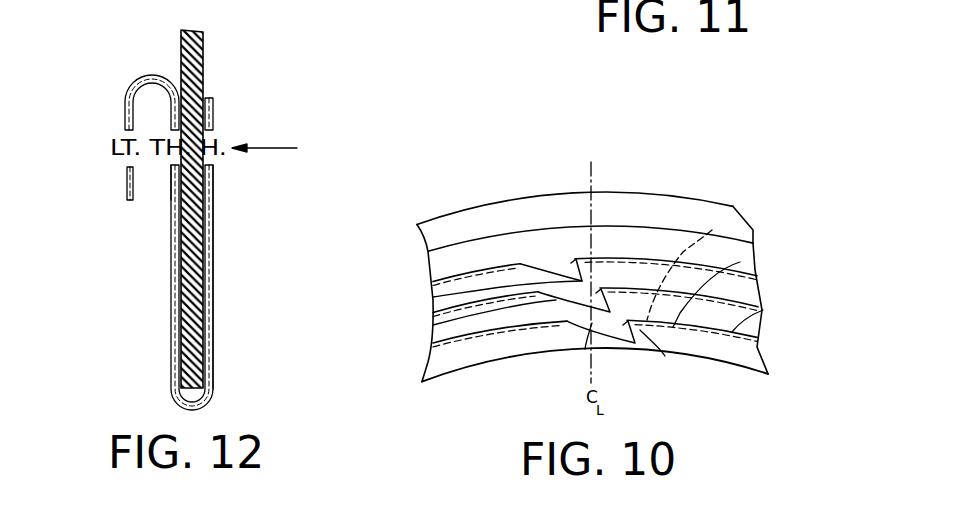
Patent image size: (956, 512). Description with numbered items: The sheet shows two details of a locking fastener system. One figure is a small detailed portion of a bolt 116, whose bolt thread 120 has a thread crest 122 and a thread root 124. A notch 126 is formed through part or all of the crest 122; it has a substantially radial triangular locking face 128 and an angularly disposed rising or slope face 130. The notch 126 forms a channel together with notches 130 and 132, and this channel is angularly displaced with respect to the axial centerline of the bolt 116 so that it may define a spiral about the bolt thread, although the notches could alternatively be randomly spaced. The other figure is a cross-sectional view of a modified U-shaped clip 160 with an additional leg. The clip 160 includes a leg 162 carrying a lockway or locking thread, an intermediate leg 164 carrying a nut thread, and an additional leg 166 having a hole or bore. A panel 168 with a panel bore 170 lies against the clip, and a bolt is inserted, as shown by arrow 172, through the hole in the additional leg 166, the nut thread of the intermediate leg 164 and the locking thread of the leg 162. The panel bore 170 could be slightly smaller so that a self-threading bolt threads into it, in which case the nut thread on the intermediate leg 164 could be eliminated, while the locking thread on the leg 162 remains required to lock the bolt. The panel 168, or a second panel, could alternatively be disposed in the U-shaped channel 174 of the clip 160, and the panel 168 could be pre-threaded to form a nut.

In FIG. 10, the bolt 116 is at (476, 372).
In FIG. 10, the bolt thread 120 is at (763, 310).
In FIG. 10, the thread crest 122 is at (740, 262).
In FIG. 10, the thread root 124 is at (712, 230).
In FIG. 10, the notch 126 is at (584, 350).
In FIG. 10, the locking face 128 is at (665, 356).
In FIG. 10, the slope face 130 is at (433, 325).
In FIG. 10, the notch 132 is at (433, 297).
In FIG. 12, the modified U-shaped clip 160 is at (142, 74).
In FIG. 12, the leg 162 is at (125, 176).
In FIG. 12, the intermediate leg 164 is at (175, 275).
In FIG. 12, the additional leg 166 is at (213, 180).
In FIG. 12, the panel 168 is at (203, 59).
In FIG. 12, the panel bore 170 is at (189, 150).
In FIG. 12, the arrow 172 is at (297, 148).
In FIG. 12, the U-shaped channel 174 is at (166, 192).